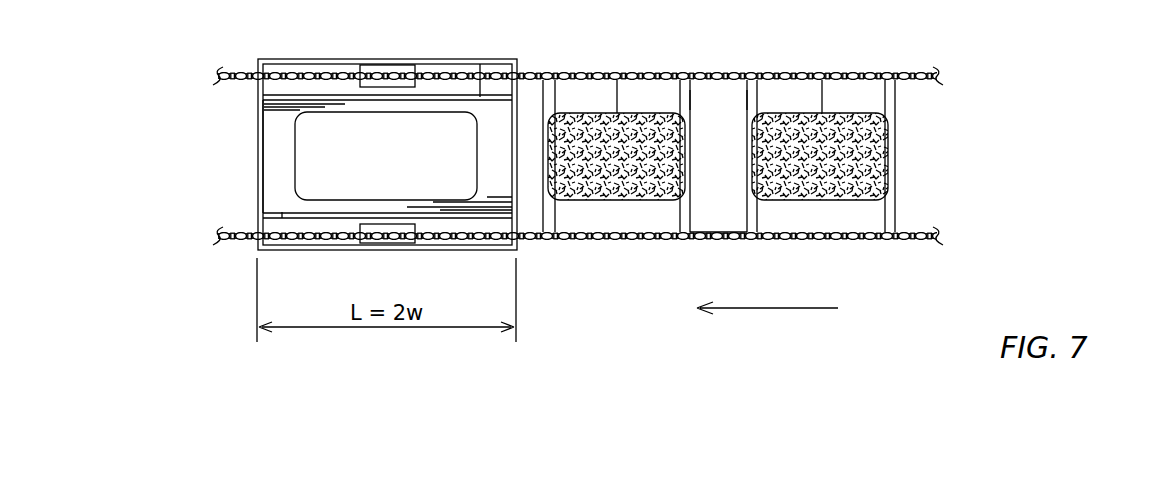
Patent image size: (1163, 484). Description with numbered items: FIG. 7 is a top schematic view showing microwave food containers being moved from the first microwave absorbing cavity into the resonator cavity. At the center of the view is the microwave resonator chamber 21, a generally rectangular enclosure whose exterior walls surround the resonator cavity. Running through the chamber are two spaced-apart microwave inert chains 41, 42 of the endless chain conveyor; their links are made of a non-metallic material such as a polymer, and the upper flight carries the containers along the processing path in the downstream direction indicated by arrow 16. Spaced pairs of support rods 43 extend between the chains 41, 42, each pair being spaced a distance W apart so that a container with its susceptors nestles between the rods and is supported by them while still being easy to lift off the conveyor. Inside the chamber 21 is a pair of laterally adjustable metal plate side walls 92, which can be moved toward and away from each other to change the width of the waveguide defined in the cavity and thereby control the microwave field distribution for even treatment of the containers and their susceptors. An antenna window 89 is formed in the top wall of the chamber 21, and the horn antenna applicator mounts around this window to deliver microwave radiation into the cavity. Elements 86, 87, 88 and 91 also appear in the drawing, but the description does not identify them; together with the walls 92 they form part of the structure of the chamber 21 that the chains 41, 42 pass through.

The downstream direction arrow 16 is at (767, 308).
The microwave resonator chamber 21 is at (303, 50).
The chain 41 is at (918, 72).
The chain 42 is at (717, 240).
The support rods 43 is at (747, 100).
The upper rail 86 is at (318, 60).
The lower rail 87 is at (318, 250).
The tray 88 is at (280, 132).
The antenna window 89 is at (390, 112).
The chain attachment 91 is at (390, 65).
The metal plate side walls 92 is at (480, 96).